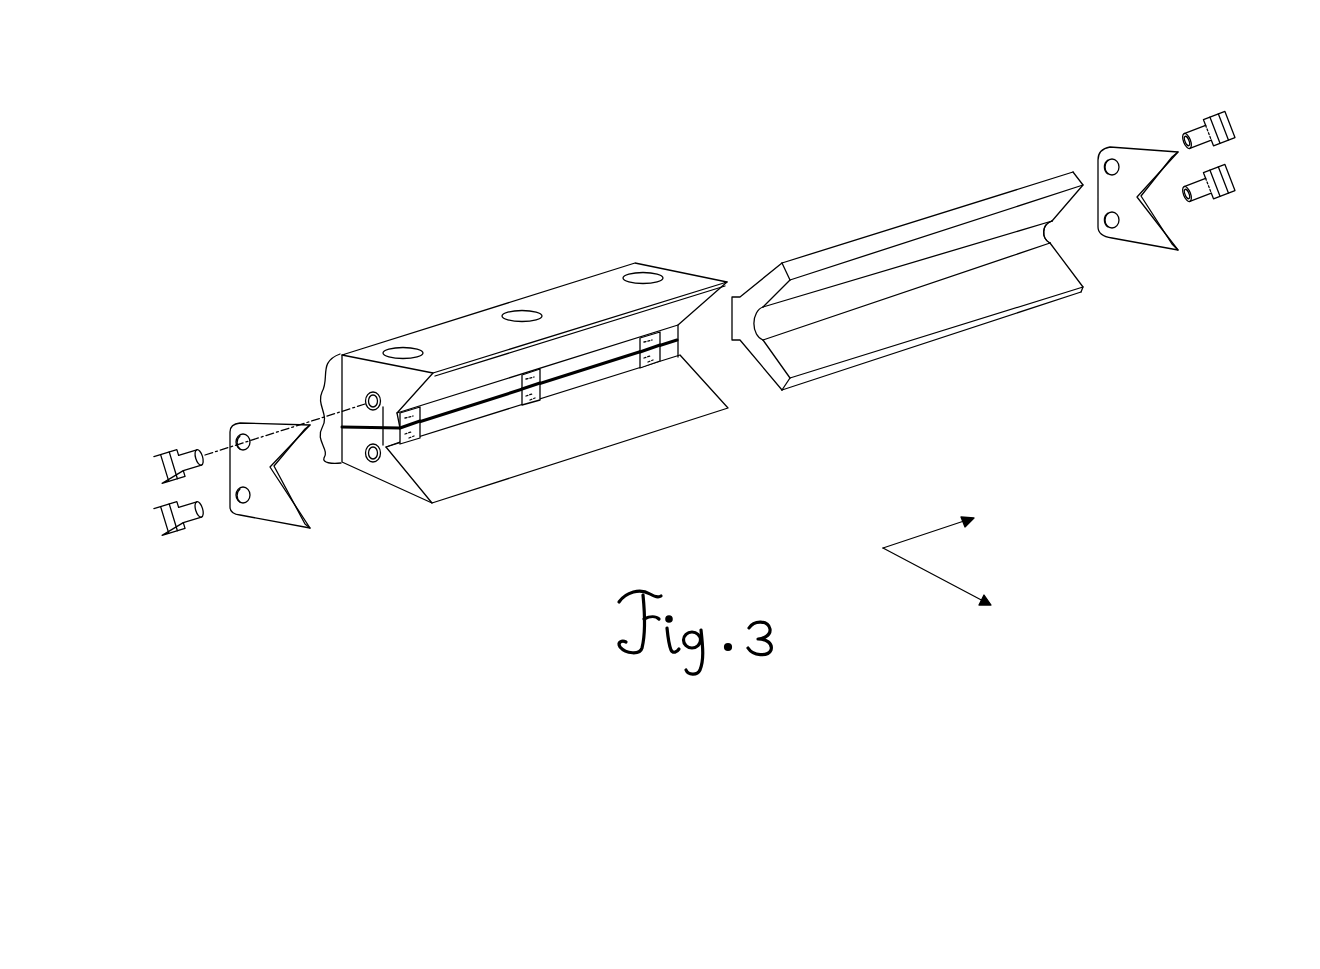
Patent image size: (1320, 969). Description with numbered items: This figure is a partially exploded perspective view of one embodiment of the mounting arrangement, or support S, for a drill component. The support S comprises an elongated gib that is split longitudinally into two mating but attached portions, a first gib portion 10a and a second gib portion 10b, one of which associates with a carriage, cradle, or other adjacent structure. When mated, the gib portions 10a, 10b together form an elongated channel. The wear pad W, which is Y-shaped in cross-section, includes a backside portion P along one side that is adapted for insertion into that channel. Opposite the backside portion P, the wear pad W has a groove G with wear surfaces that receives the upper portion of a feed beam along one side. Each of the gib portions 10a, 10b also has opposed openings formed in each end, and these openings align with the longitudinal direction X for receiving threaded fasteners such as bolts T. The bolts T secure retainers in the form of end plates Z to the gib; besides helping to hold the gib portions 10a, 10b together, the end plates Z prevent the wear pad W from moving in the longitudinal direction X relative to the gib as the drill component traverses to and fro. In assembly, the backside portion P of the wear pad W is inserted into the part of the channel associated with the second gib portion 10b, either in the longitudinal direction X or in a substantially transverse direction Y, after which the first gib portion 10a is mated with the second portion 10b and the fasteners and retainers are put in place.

The support S is at (498, 395).
The first gib portion 10a is at (457, 337).
The second gib portion 10b is at (407, 484).
The backside portion P is at (741, 296).
The wear pad W is at (907, 314).
The groove G is at (1086, 240).
The end plates Z is at (1147, 147).
The bolts T is at (1232, 127).
The longitudinal direction X is at (947, 520).
The transverse direction Y is at (964, 589).